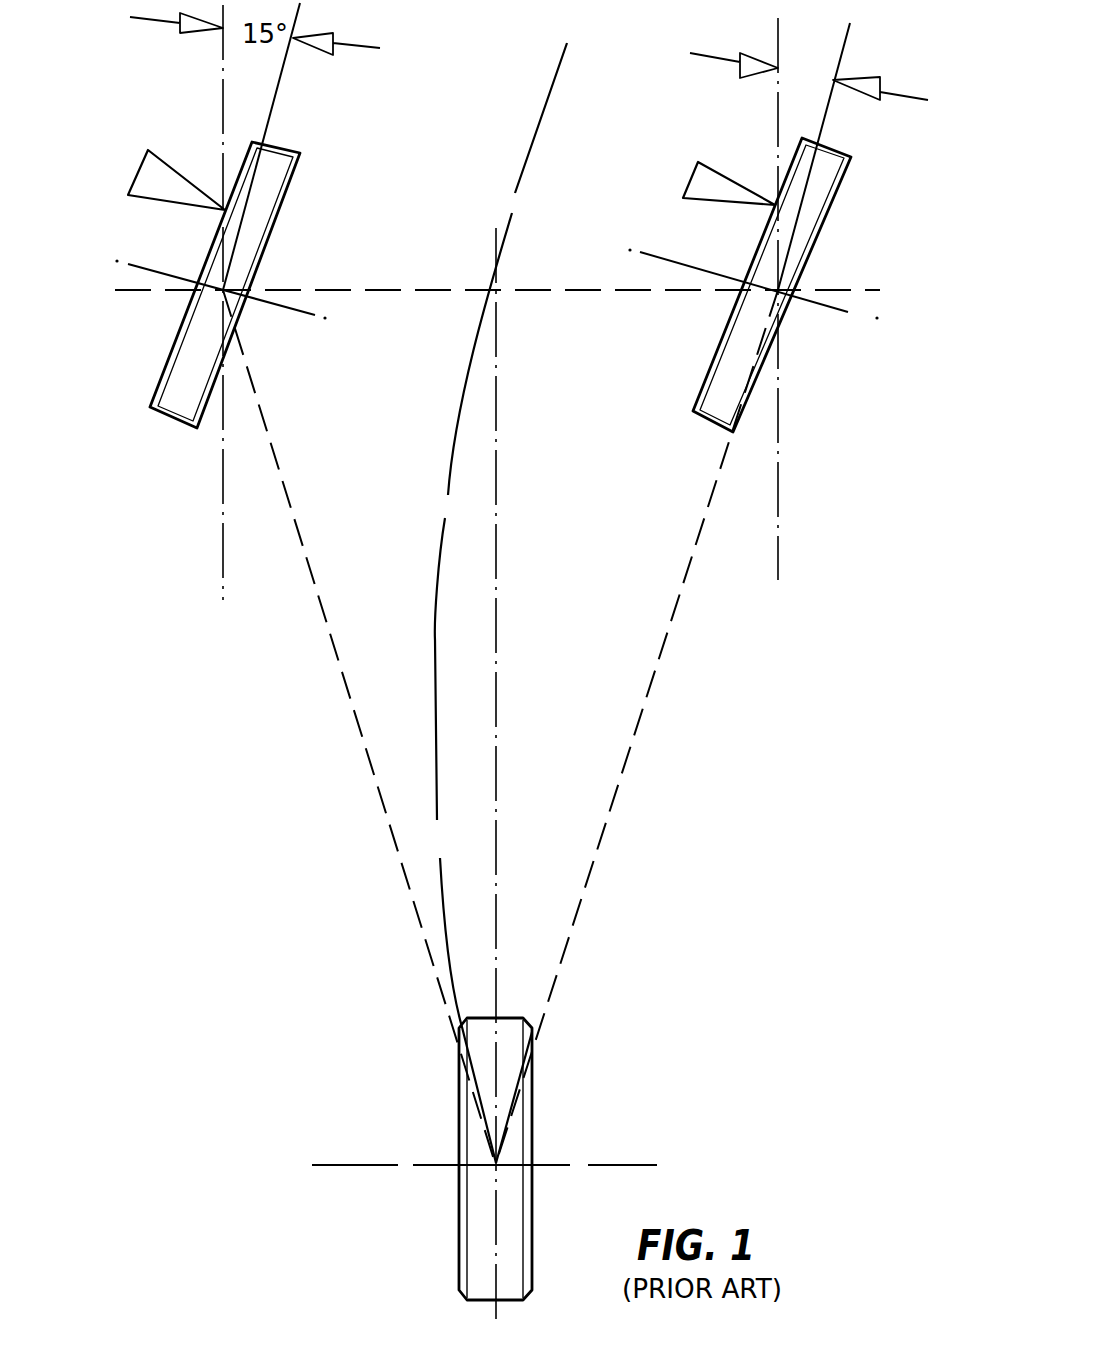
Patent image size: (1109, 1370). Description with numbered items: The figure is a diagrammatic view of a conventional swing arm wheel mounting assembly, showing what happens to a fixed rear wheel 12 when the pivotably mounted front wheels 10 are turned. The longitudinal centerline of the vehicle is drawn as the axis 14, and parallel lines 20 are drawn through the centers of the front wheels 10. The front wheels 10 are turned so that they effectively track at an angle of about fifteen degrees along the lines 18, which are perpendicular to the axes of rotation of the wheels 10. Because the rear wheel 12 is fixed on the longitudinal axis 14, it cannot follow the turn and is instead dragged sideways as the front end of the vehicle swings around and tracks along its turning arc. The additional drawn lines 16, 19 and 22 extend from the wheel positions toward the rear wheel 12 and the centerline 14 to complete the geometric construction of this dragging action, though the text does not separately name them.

The front wheel 10 is at (820, 243).
The rear wheel 12 is at (533, 1115).
The longitudinal centerline 14 is at (498, 658).
The beam path (dashed) 16 is at (356, 722).
The tracking line 18 is at (285, 70).
The curved beam path 19 is at (437, 740).
The parallel line 20 is at (223, 540).
The sensor normal reference line 22 is at (847, 314).